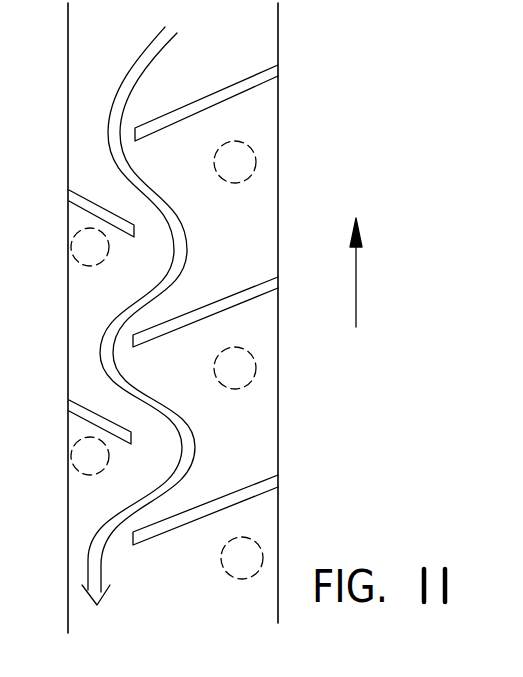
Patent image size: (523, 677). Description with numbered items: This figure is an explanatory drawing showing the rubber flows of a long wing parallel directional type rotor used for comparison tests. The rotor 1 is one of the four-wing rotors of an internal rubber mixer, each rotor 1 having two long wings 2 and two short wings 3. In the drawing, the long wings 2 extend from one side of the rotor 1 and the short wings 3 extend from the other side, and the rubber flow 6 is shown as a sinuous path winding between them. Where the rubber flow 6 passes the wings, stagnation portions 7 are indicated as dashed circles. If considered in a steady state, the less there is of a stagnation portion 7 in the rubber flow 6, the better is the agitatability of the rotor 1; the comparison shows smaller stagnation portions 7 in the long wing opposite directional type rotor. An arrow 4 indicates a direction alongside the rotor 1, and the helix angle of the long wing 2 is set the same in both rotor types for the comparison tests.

The rotor 1 is at (257, 24).
The long wing 2 is at (250, 77).
The short wing 3 is at (82, 197).
The flow direction arrow 4 is at (357, 282).
The rubber flow 6 is at (156, 41).
The stagnation portion 7 is at (302, 147).